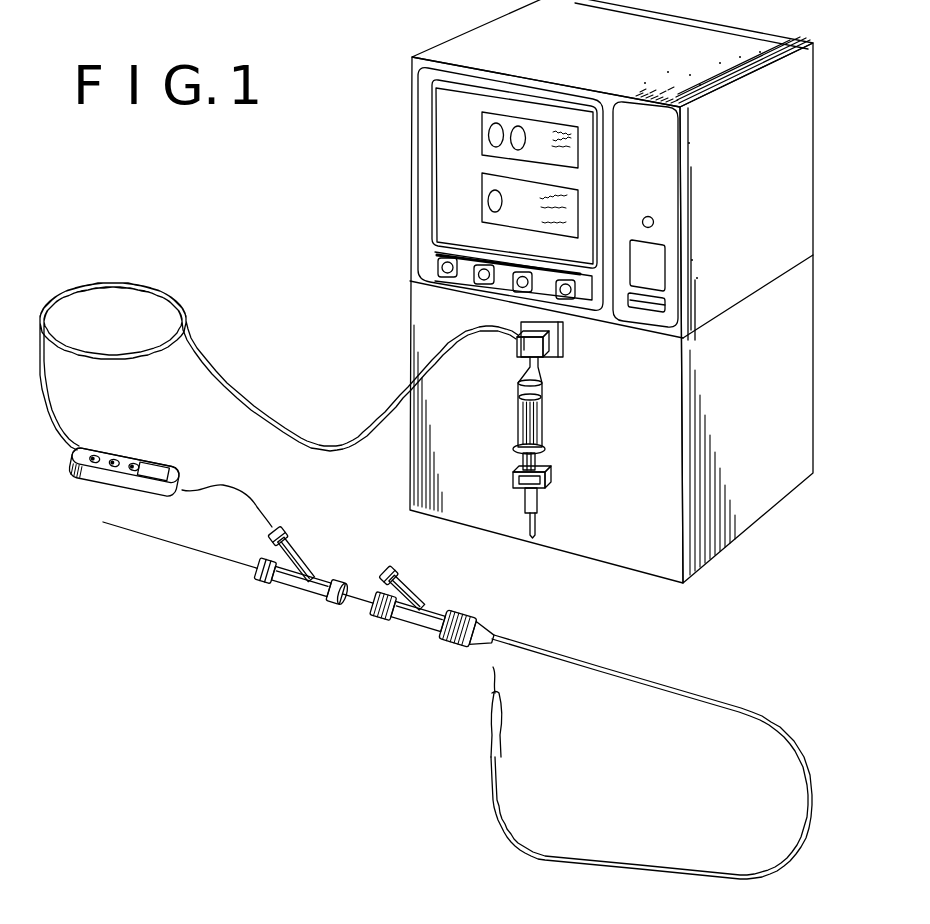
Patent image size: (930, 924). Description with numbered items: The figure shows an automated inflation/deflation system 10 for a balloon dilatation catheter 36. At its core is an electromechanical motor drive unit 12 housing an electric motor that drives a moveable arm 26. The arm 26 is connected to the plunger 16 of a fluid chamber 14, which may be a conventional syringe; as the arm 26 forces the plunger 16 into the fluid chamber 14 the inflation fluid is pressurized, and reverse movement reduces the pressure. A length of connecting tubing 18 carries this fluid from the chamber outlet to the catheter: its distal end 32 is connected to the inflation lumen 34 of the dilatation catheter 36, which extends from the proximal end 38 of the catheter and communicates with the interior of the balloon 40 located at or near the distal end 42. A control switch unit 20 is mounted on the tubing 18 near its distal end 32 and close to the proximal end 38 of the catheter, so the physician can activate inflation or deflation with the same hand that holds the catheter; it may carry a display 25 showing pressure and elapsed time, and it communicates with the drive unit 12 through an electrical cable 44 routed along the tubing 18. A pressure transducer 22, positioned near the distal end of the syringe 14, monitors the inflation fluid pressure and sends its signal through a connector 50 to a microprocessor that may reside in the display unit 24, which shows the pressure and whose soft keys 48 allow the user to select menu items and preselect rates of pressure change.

The automated inflation/deflation system 10 is at (705, 612).
The electromechanical motor drive unit 12 is at (752, 518).
The fluid chamber 14 is at (548, 389).
The plunger 16 is at (518, 470).
The connecting tubing 18 is at (133, 283).
The control switch unit 20 is at (127, 448).
The pressure transducer 22 is at (545, 358).
The display unit 24 is at (411, 140).
The display 25 is at (160, 470).
The moveable arm 26 is at (545, 497).
The distal end of tubing 32 is at (275, 525).
The inflation lumen 34 is at (303, 550).
The balloon dilatation catheter 36 is at (363, 603).
The proximal end of dilatation catheter 38 is at (302, 592).
The balloon 40 is at (503, 707).
The distal end of dilatation catheter 42 is at (495, 677).
The electrical cable 44 is at (72, 455).
The soft keys 48 is at (437, 263).
The connector 50 is at (565, 344).